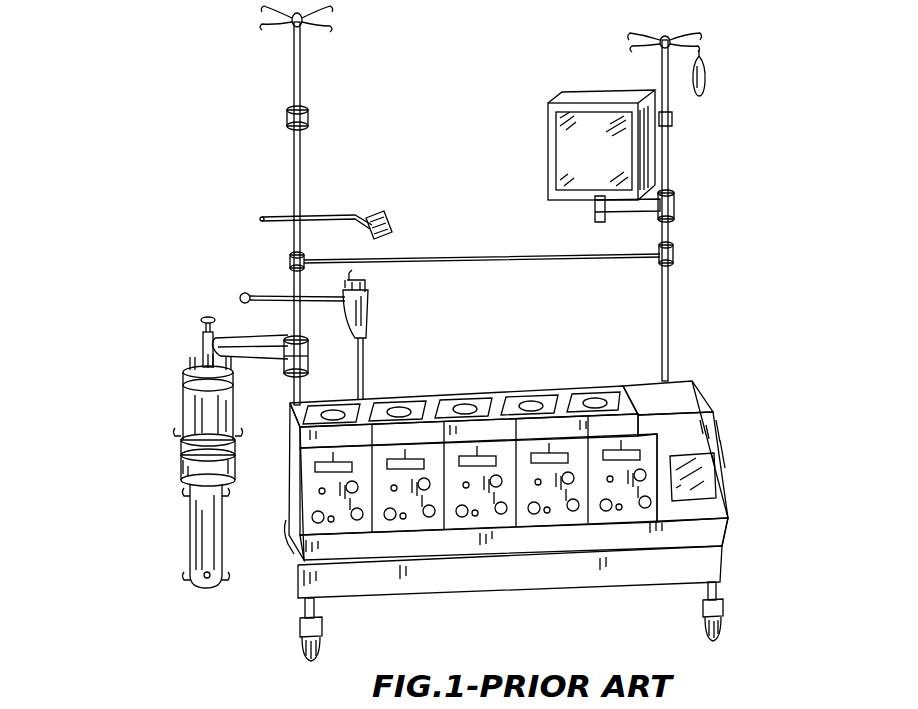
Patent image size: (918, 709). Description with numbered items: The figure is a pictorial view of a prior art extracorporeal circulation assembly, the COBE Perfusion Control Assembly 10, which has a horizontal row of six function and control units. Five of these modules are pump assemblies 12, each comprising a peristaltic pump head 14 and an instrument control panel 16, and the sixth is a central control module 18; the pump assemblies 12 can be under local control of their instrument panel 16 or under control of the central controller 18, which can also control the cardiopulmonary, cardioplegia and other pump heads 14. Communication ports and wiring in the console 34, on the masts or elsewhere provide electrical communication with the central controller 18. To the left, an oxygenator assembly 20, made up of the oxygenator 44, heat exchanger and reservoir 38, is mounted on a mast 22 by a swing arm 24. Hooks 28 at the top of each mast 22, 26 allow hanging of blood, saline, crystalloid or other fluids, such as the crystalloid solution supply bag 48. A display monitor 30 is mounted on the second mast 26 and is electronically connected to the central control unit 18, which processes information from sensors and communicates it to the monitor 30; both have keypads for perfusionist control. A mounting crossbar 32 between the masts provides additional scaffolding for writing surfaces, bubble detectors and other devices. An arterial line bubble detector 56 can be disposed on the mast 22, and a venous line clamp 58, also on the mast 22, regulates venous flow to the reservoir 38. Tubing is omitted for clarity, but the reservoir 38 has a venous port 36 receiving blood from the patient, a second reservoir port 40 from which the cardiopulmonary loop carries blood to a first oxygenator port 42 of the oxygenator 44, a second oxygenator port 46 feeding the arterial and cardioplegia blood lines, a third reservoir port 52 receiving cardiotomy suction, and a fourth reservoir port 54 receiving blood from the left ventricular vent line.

The perfusion control assembly 10 is at (748, 418).
The pump assembly 12 is at (287, 487).
The peristaltic pump head 14 is at (507, 396).
The instrument control panel 16 is at (632, 512).
The central control module 18 is at (718, 463).
The oxygenator assembly 20 is at (172, 422).
The mast 22 is at (303, 97).
The swing arm 24 is at (242, 338).
The mast 26 is at (670, 318).
The hooks 28 is at (702, 40).
The display monitor 30 is at (570, 92).
The mounting crossbar 32 is at (455, 257).
The console 34 is at (517, 586).
The venous port 36 is at (200, 355).
The reservoir 38 is at (186, 406).
The second reservoir port 40 is at (236, 434).
The first oxygenator port 42 is at (229, 487).
The oxygenator 44 is at (190, 530).
The second oxygenator port 46 is at (230, 578).
The crystalloid solution supply bag 48 is at (708, 78).
The third reservoir port 52 is at (185, 366).
The fourth reservoir port 54 is at (248, 366).
The arterial line bubble detector 56 is at (386, 212).
The venous line clamp 58 is at (370, 316).